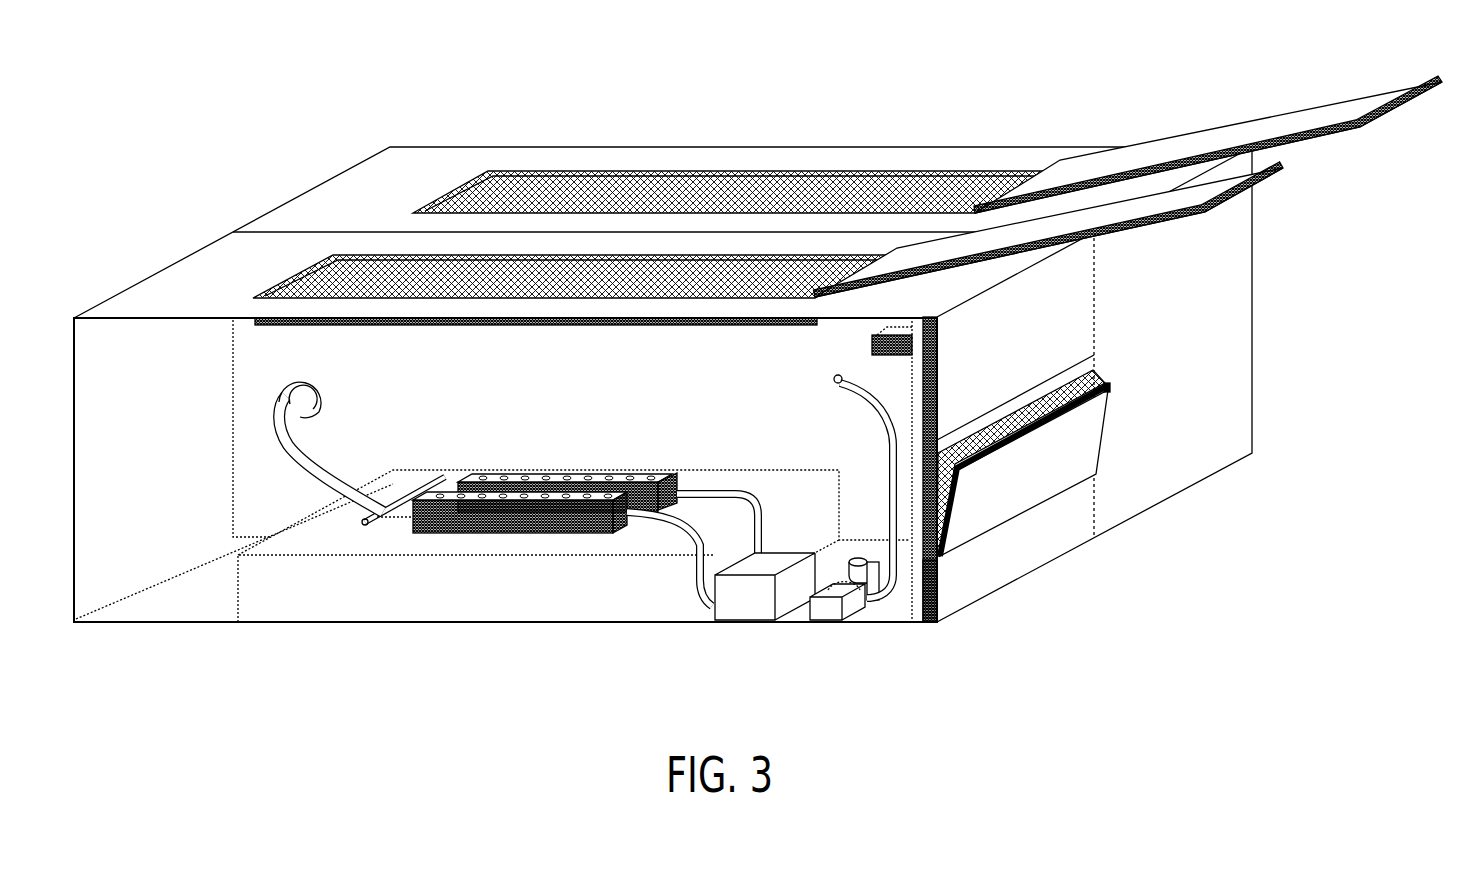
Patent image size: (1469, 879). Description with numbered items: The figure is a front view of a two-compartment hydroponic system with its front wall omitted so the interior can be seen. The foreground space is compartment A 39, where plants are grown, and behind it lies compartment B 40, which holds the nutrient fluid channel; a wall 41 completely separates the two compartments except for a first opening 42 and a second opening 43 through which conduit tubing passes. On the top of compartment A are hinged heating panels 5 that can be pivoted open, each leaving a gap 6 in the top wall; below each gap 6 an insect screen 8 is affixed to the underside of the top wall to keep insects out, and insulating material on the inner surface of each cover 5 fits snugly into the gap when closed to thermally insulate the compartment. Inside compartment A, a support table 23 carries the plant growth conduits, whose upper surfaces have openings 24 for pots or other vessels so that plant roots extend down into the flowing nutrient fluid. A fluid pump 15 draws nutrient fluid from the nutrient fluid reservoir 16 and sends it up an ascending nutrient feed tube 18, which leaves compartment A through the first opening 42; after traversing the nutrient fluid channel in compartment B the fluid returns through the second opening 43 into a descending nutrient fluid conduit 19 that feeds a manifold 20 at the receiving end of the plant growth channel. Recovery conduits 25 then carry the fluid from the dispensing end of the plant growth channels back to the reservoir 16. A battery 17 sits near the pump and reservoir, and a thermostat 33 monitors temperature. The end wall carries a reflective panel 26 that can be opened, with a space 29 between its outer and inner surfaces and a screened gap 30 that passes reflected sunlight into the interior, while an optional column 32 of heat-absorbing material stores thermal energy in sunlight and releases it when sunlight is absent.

The heating panels 5 is at (1296, 128).
The gap 6 is at (655, 190).
The insect screen 8 is at (255, 320).
The fluid pump 15 is at (828, 604).
The nutrient fluid reservoir 16 is at (750, 600).
The battery 17 is at (876, 590).
The ascending nutrient feed tube 18 is at (895, 431).
The descending nutrient fluid conduit 19 is at (314, 470).
The manifold 20 is at (380, 516).
The support table 23 is at (522, 598).
The openings in plant growth conduits 24 is at (482, 478).
The recovery conduits 25 is at (762, 537).
The reflective panel 26 is at (1085, 432).
The space between outer and inner surfaces of reflective panel 29 is at (1106, 382).
The gap covered by insect screen 30 is at (1076, 386).
The column of heat-absorbing material 32 is at (915, 604).
The thermostat 33 is at (905, 345).
The compartment A 39 is at (185, 271).
The compartment B 40 is at (383, 174).
The wall separating compartments 41 is at (263, 229).
The first opening in wall 42 is at (835, 378).
The second opening in wall 43 is at (325, 407).